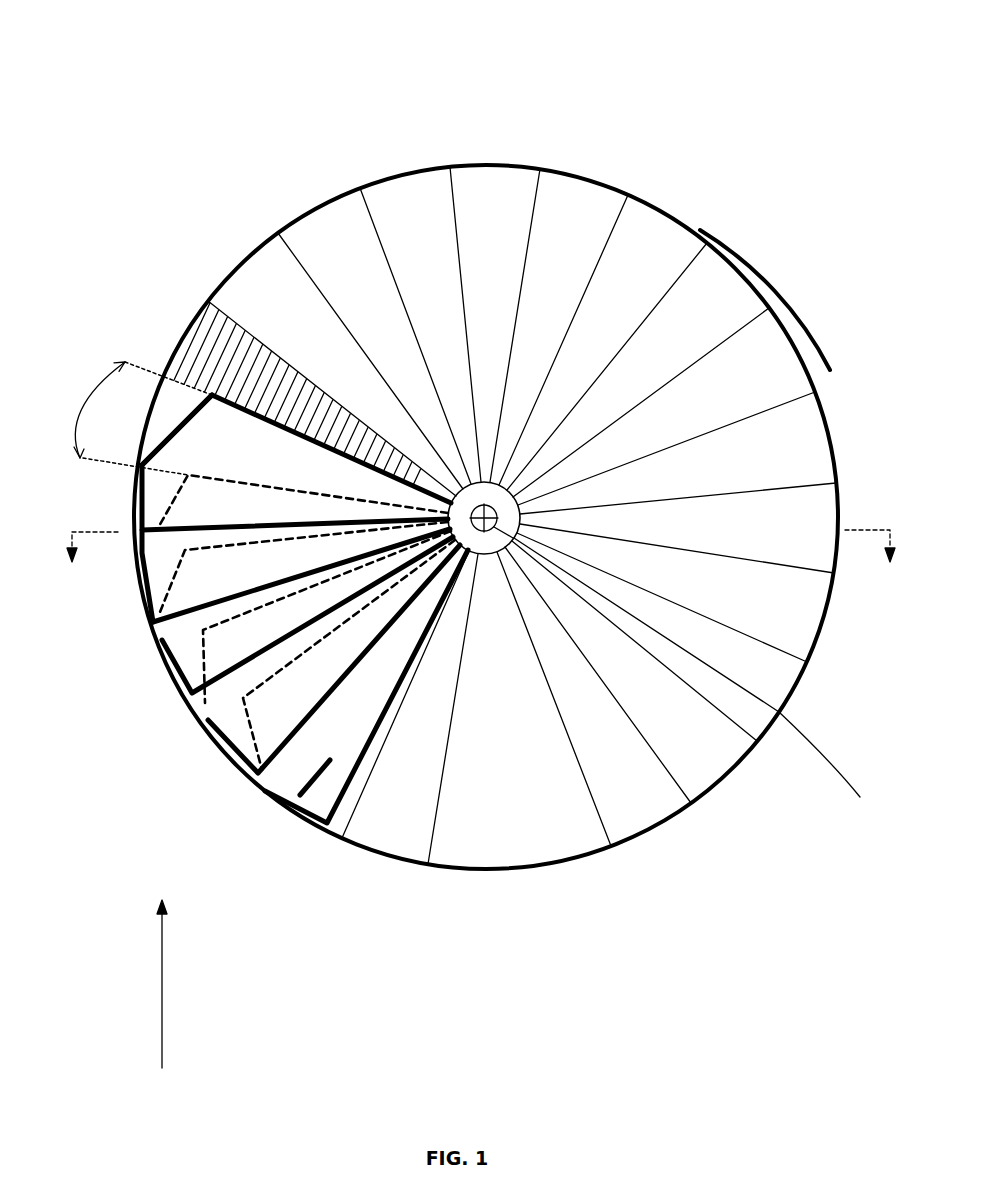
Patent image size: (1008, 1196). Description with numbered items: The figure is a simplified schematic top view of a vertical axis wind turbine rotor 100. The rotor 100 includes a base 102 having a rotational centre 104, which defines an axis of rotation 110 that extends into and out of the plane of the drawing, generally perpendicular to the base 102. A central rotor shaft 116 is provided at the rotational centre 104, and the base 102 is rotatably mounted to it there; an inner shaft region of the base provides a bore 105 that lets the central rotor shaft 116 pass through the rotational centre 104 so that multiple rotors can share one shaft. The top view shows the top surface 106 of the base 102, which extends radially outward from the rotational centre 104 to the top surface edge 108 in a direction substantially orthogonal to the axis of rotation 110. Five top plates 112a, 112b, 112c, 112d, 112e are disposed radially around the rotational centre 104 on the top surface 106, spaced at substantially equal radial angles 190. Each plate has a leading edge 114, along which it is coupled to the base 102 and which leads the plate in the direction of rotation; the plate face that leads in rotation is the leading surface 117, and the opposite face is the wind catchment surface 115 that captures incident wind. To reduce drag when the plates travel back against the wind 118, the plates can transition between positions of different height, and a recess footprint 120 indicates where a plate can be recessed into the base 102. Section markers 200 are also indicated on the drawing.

The vertical axis wind turbine rotor 100 is at (285, 132).
The base 102 is at (678, 212).
The rotational centre 104 is at (520, 506).
The bore 105 is at (486, 554).
The top surface 106 is at (712, 300).
The top surface edge 108 is at (774, 294).
The axis of rotation 110 is at (481, 482).
The top plate 112a is at (137, 513).
The top plate 112b is at (165, 578).
The top plate 112c is at (185, 663).
The top plate 112d is at (235, 730).
The top plate 112e is at (272, 772).
The leading edge 114 is at (206, 392).
The wind catchment surface 115 is at (366, 786).
The central rotor shaft 116 is at (699, 681).
The leading surface 117 is at (314, 787).
The wind 118 is at (180, 984).
The recess footprint 120 is at (208, 318).
The radial angle 190 is at (93, 403).
The section line 200 is at (480, 562).